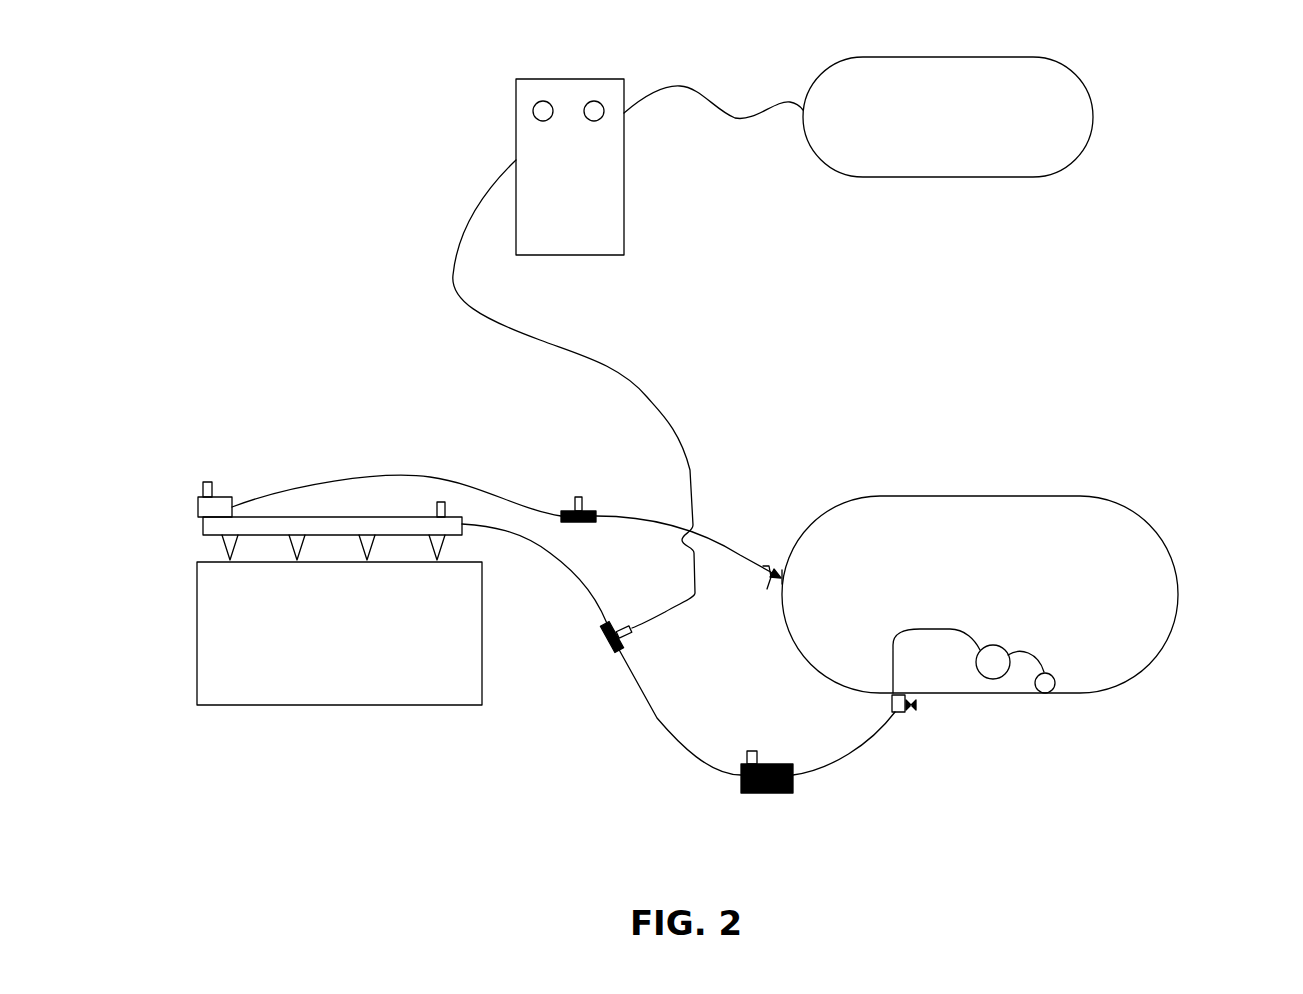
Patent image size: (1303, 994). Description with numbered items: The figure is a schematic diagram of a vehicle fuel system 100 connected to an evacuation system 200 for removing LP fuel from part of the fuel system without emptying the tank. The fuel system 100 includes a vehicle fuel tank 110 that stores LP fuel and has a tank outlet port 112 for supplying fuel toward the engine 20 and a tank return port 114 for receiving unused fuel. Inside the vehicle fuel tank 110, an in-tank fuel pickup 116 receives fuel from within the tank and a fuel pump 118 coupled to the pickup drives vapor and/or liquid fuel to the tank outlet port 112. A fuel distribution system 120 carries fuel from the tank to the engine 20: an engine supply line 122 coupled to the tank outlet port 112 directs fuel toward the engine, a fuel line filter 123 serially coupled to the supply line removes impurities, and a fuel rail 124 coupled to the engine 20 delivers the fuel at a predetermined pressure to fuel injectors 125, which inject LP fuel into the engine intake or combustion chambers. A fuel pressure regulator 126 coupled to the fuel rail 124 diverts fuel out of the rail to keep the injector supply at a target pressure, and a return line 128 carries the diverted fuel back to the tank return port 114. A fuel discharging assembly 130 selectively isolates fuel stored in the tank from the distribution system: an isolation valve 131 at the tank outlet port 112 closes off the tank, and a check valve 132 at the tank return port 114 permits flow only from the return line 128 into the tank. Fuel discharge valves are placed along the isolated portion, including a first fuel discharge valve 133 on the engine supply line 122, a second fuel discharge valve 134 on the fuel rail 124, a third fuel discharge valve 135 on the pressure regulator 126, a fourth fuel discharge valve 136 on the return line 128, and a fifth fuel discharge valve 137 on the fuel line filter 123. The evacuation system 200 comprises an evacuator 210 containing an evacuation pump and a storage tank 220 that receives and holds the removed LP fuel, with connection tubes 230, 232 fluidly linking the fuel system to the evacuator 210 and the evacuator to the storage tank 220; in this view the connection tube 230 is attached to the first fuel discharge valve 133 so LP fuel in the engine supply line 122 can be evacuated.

The engine 20 is at (325, 705).
The fuel system 100 is at (1142, 467).
The vehicle fuel tank 110 is at (1180, 590).
The tank outlet port 112 is at (892, 700).
The tank return port 114 is at (787, 567).
The in-tank fuel pickup 116 is at (1053, 674).
The fuel pump 118 is at (998, 645).
The fuel distribution system 120 is at (276, 444).
The engine supply line 122 is at (652, 725).
The fuel line filter 123 is at (766, 793).
The fuel rail 124 is at (312, 517).
The fuel injectors 125 is at (215, 540).
The fuel pressure regulator 126 is at (205, 505).
The return line 128 is at (368, 478).
The fuel discharging assembly 130 is at (906, 816).
The isolation valve 131 is at (916, 705).
The check valve 132 is at (767, 590).
The first fuel discharge valve 133 is at (602, 642).
The second fuel discharge valve 134 is at (441, 502).
The third fuel discharge valve 135 is at (207, 482).
The fourth fuel discharge valve 136 is at (578, 497).
The fifth fuel discharge valve 137 is at (752, 751).
The evacuation system 200 is at (1196, 67).
The evacuator 210 is at (560, 79).
The storage tank 220 is at (1093, 100).
The connection tube 230 is at (607, 363).
The connection tube 232 is at (708, 86).